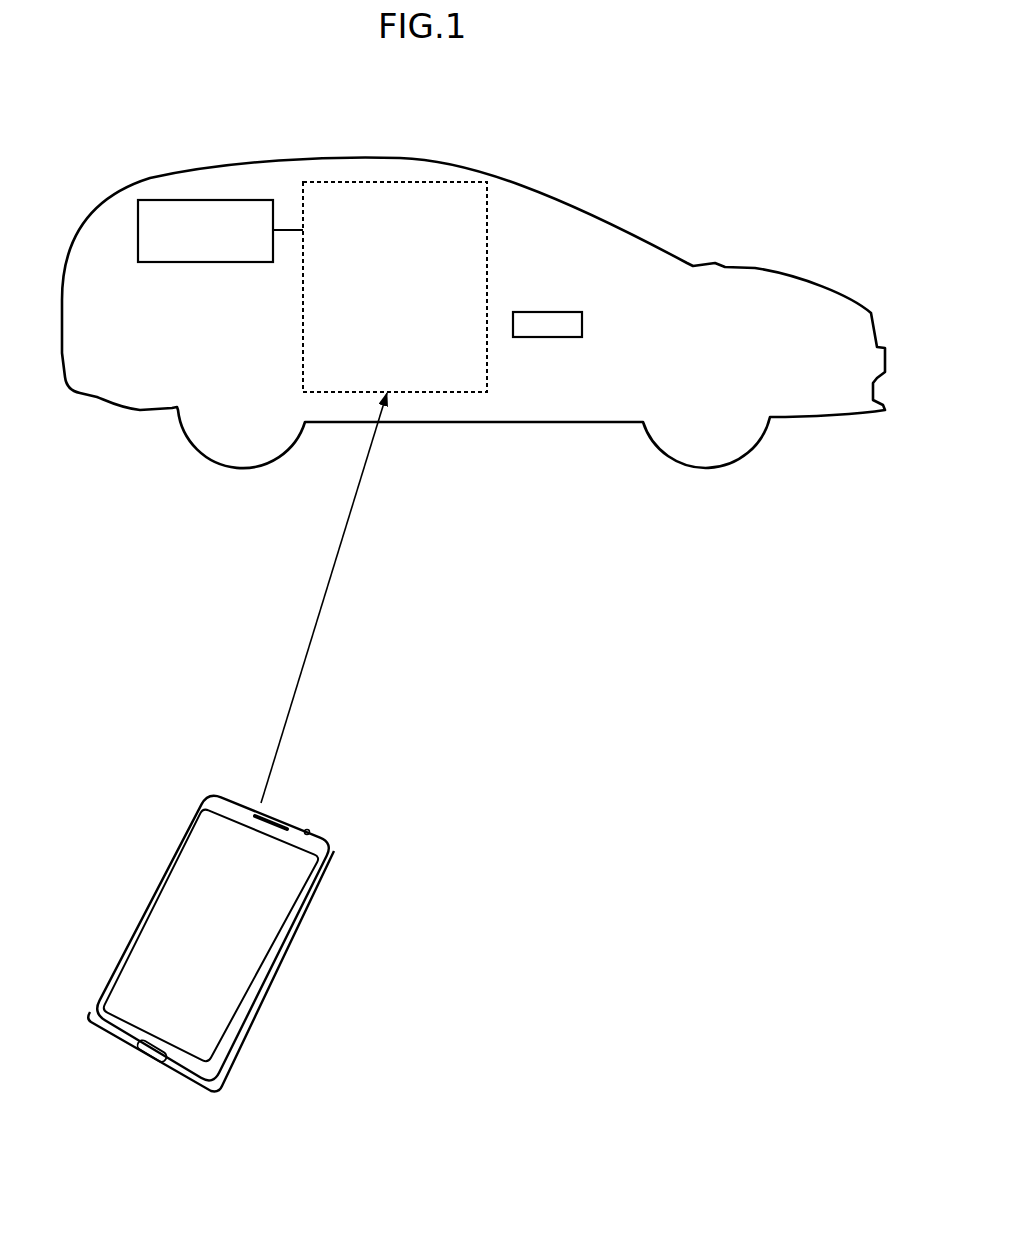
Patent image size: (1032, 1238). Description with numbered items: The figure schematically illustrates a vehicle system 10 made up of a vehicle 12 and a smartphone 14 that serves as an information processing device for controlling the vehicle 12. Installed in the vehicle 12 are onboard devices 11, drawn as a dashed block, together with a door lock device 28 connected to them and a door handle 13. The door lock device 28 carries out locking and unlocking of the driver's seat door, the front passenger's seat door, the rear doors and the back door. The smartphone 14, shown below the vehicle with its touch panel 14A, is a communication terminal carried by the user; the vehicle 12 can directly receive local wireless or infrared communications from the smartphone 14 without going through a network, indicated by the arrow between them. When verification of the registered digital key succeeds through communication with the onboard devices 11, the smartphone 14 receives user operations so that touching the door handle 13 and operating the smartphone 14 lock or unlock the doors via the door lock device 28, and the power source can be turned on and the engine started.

The vehicle system 10 is at (627, 672).
The onboard devices 11 is at (487, 253).
The vehicle 12 is at (613, 197).
The door handle 13 is at (551, 337).
The smartphone 14 is at (328, 912).
The touch panel 14A is at (220, 997).
The door lock device 28 is at (222, 200).